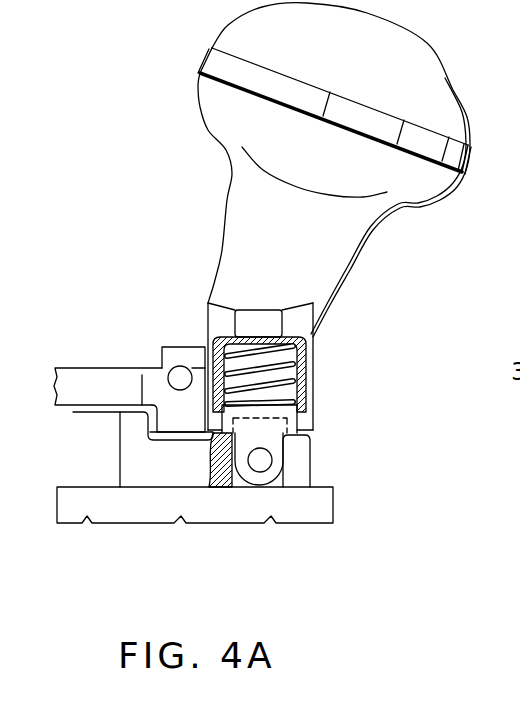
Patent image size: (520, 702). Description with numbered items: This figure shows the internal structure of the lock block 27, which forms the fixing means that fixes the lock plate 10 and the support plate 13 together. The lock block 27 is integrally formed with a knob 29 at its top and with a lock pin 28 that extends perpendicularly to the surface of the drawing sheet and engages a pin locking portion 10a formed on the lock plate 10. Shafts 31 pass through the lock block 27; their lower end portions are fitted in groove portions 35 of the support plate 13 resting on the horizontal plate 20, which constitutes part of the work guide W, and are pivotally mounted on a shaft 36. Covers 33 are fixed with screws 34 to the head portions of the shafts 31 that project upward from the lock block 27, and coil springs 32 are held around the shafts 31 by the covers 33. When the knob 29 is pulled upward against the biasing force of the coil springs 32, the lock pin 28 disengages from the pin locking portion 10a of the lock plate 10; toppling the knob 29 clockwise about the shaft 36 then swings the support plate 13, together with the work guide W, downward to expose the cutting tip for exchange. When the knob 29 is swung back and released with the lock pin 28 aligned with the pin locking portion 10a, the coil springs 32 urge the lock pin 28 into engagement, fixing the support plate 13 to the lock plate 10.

The knob 29 is at (397, 65).
The screw 34 is at (277, 315).
The cover 33 is at (307, 340).
The shaft 31 is at (293, 370).
The coil spring 32 is at (308, 395).
The groove portion 35 is at (293, 465).
The shaft 36 is at (262, 460).
The horizontal plate 20 is at (223, 510).
The support plate 13 is at (185, 462).
The work guide W is at (157, 527).
The lock plate 10 is at (72, 388).
The pin locking portion 10a is at (183, 392).
The lock block 27 is at (188, 352).
The lock pin 28 is at (177, 375).